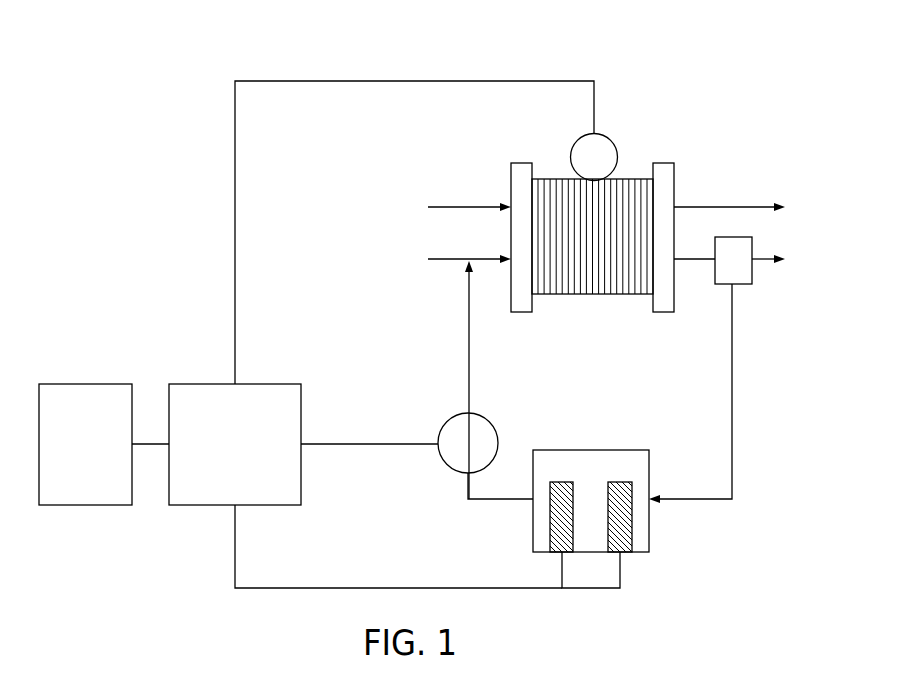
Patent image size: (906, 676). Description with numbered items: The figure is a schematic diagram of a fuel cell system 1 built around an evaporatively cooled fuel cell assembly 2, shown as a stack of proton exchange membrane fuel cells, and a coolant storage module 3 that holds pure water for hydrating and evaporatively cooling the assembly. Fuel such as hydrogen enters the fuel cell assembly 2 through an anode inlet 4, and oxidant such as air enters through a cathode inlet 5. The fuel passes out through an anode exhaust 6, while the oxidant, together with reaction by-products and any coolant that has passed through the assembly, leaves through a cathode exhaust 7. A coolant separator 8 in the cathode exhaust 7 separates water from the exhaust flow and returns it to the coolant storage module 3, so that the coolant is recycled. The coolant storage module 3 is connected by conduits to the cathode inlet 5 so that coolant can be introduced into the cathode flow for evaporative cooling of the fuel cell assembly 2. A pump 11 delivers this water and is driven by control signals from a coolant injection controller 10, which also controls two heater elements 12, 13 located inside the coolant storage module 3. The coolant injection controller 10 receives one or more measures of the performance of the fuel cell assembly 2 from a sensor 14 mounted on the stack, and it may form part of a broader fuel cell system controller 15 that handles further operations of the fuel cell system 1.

The fuel cell system 1 is at (322, 63).
The fuel cell assembly 2 is at (640, 148).
The coolant storage module 3 is at (651, 535).
The anode inlet 4 is at (436, 206).
The cathode inlet 5 is at (440, 262).
The anode exhaust 6 is at (718, 200).
The cathode exhaust 7 is at (692, 262).
The coolant separator 8 is at (733, 263).
The coolant injection controller 10 is at (365, 486).
The pump 11 is at (460, 440).
The heater element 12 is at (547, 525).
The heater element 13 is at (620, 480).
The sensor 14 is at (582, 148).
The fuel cell system controller 15 is at (104, 444).